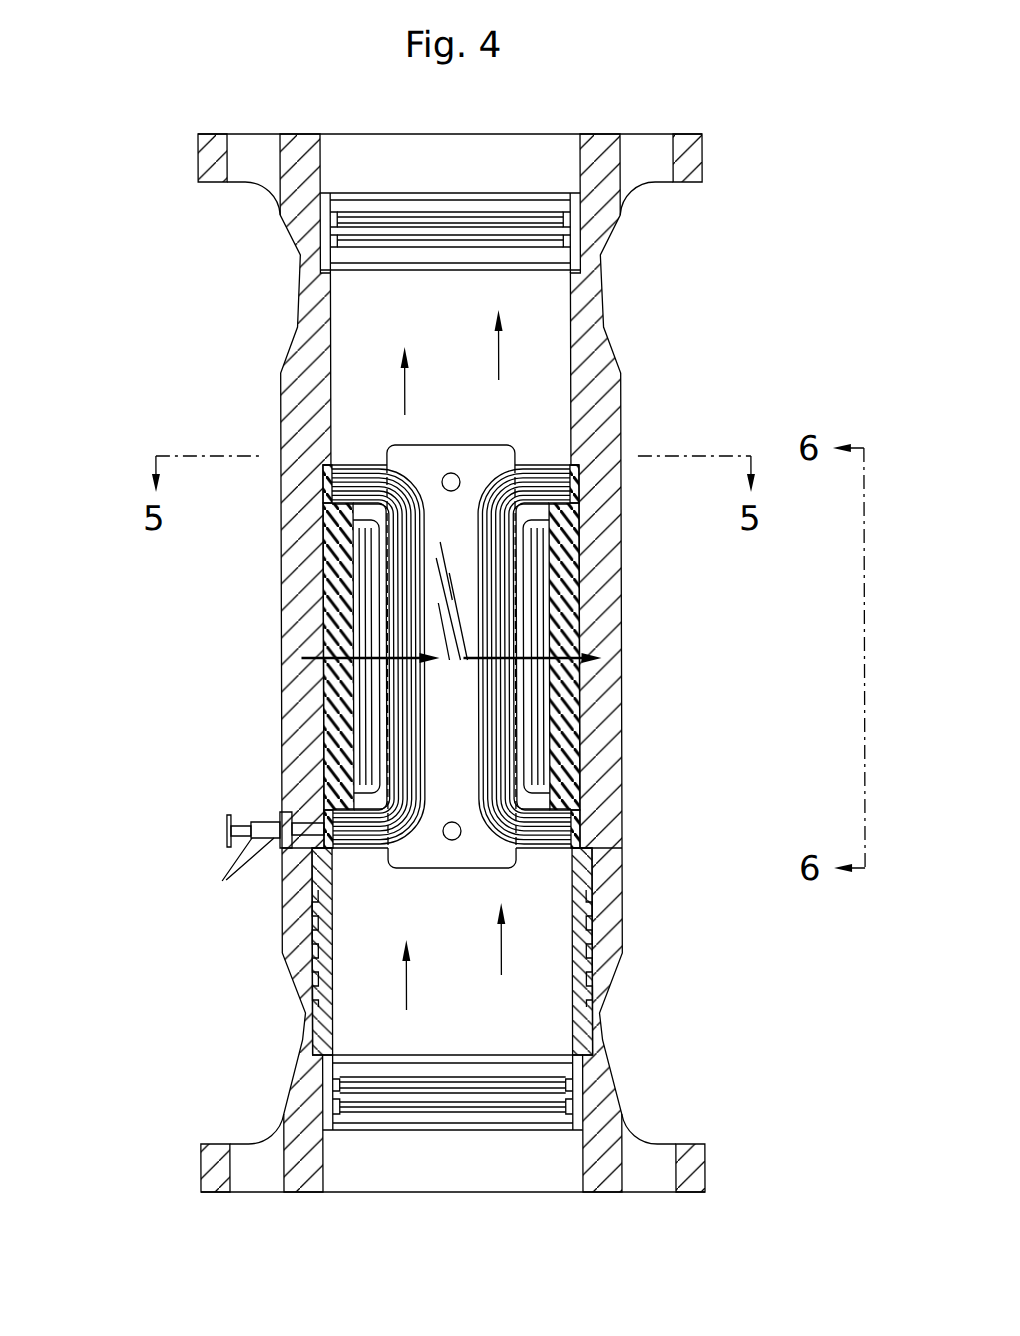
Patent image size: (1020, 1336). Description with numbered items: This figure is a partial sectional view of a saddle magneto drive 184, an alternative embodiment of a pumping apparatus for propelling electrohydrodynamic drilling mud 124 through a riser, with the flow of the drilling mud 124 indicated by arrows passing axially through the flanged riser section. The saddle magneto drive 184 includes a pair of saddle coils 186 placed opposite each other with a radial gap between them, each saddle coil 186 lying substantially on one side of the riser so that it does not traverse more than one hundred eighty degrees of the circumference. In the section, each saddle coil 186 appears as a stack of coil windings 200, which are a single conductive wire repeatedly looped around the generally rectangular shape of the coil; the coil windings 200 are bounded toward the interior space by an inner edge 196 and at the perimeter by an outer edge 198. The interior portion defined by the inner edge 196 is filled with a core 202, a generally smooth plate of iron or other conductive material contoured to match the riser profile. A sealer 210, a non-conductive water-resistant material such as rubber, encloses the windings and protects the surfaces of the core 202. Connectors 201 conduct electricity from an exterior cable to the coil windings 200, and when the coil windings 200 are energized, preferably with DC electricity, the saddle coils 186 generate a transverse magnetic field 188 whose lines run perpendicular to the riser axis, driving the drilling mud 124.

The saddle magneto drive 184 is at (172, 289).
The saddle coil 186 is at (248, 668).
The magnetic field 188 is at (435, 632).
The electrohydrodynamic drilling mud 124 is at (498, 350).
The outer edge 198 is at (545, 463).
The coil windings 200 is at (571, 488).
The inner edge 196 is at (510, 620).
The core 202 is at (535, 730).
The sealer 210 is at (570, 787).
The connectors 201 is at (262, 822).